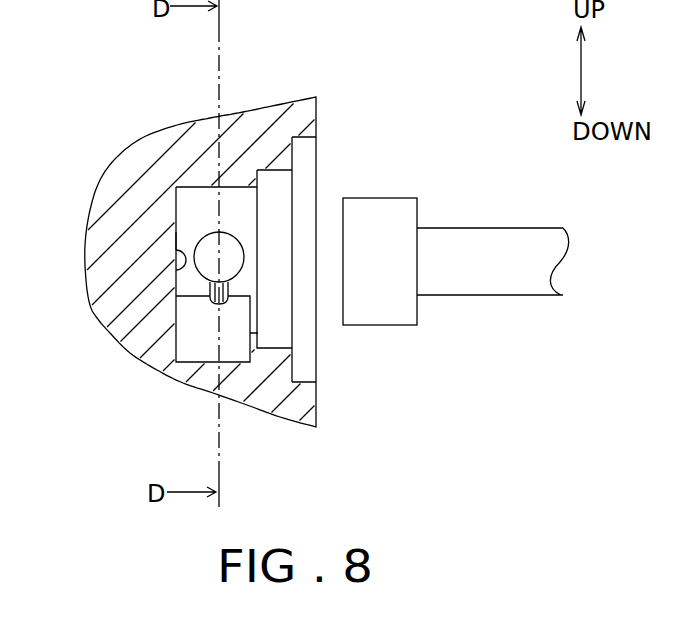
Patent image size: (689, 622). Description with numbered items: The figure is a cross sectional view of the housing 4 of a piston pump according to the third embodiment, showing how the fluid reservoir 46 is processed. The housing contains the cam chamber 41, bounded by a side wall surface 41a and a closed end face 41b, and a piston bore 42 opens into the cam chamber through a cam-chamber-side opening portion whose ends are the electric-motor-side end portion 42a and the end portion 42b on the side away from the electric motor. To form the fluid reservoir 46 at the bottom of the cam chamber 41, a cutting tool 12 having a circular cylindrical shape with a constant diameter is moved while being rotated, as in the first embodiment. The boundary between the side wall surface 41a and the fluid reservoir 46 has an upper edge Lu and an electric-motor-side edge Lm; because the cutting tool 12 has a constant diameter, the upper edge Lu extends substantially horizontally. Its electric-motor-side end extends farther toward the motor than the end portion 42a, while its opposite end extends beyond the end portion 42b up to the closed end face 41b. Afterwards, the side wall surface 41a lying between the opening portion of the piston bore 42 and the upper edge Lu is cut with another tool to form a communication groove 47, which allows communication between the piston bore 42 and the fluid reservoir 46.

The vehicle seat / assembly 4 is at (154, 118).
The cutting tool 12 is at (393, 218).
The cam chamber 41 is at (273, 247).
The side wall surface 41a is at (284, 137).
The closed end face 41b is at (176, 272).
The piston bore 42 is at (208, 236).
The end portion 42a is at (245, 260).
The end portion 42b is at (195, 257).
The fluid reservoir 46 is at (198, 340).
The communication groove 47 is at (207, 288).
The electric-motor-side edge Lm is at (252, 312).
The upper edge Lu is at (234, 296).